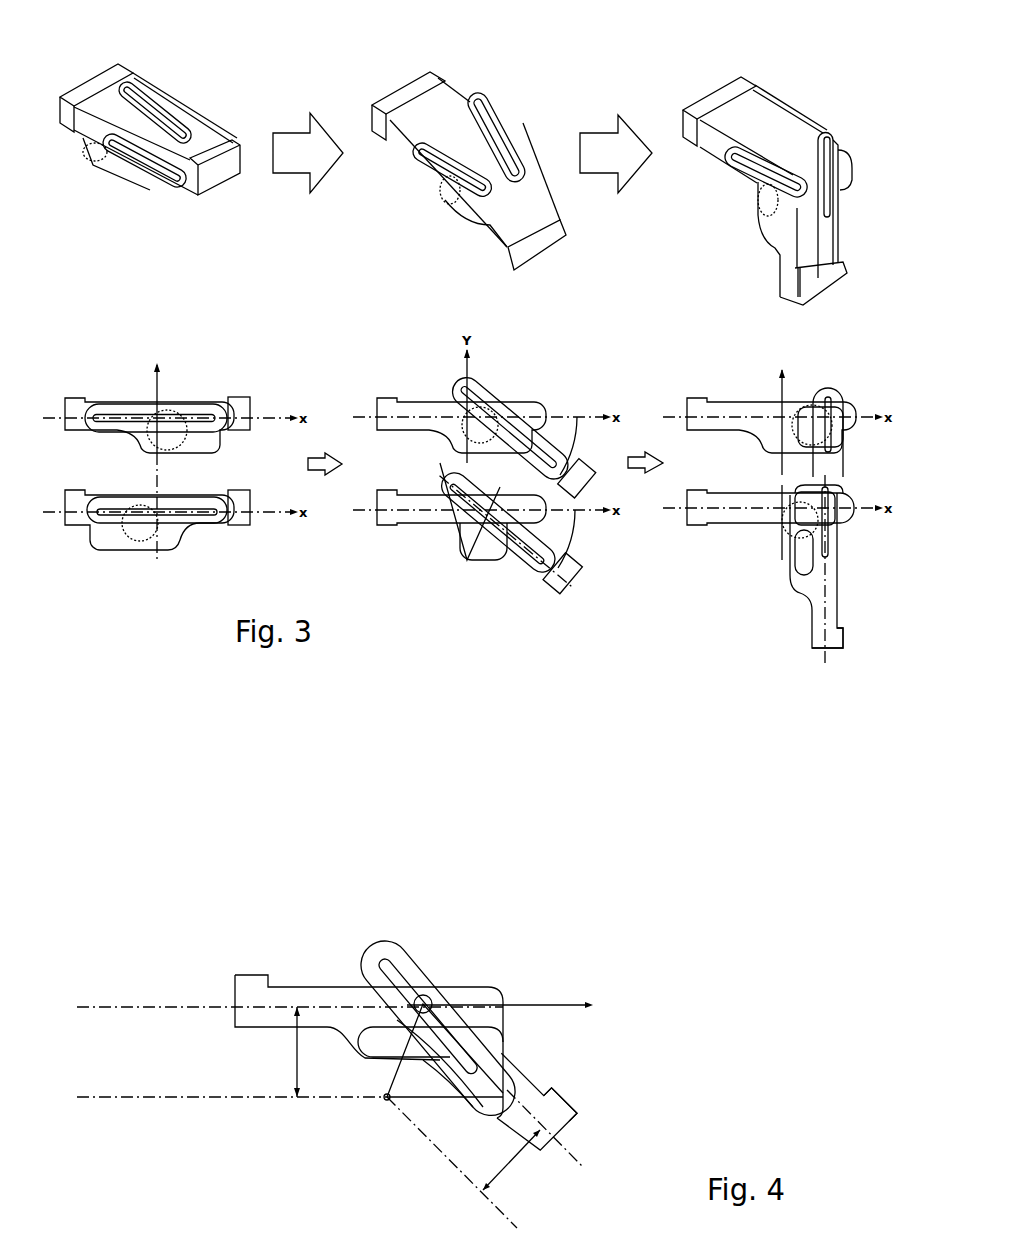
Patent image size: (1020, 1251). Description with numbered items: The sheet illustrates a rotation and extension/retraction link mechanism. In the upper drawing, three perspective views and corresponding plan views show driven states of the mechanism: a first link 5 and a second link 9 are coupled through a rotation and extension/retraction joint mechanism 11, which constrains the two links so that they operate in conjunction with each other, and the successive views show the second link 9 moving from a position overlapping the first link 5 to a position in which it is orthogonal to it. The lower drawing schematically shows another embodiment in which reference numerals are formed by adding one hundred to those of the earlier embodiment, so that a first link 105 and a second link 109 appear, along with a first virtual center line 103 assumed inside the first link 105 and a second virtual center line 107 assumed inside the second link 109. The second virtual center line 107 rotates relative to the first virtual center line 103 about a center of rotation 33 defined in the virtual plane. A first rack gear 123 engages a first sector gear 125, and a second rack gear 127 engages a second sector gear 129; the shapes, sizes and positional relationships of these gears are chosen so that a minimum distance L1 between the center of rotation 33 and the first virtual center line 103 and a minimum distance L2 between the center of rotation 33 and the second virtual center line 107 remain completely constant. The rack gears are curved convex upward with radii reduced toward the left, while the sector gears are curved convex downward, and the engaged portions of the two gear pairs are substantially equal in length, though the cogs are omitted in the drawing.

In FIG. 3, the first link 5 is at (117, 67).
In FIG. 3, the rotation and extension/retraction joint mechanism 11 is at (170, 98).
In FIG. 3, the second link 9 is at (232, 142).
In FIG. 4, the first link 105 is at (243, 975).
In FIG. 4, the first virtual center line 103 is at (550, 1000).
In FIG. 4, the second virtual center line 107 is at (577, 1155).
In FIG. 4, the second link 109 is at (567, 1100).
In FIG. 4, the center of rotation 33 is at (385, 1100).
In FIG. 4, the first rack gear 123 is at (385, 1043).
In FIG. 4, the first sector gear 125 is at (367, 1073).
In FIG. 4, the second rack gear 127 is at (432, 1129).
In FIG. 4, the second sector gear 129 is at (463, 1062).
In FIG. 4, the minimum distance L1 is at (293, 1052).
In FIG. 4, the minimum distance L2 is at (518, 1155).